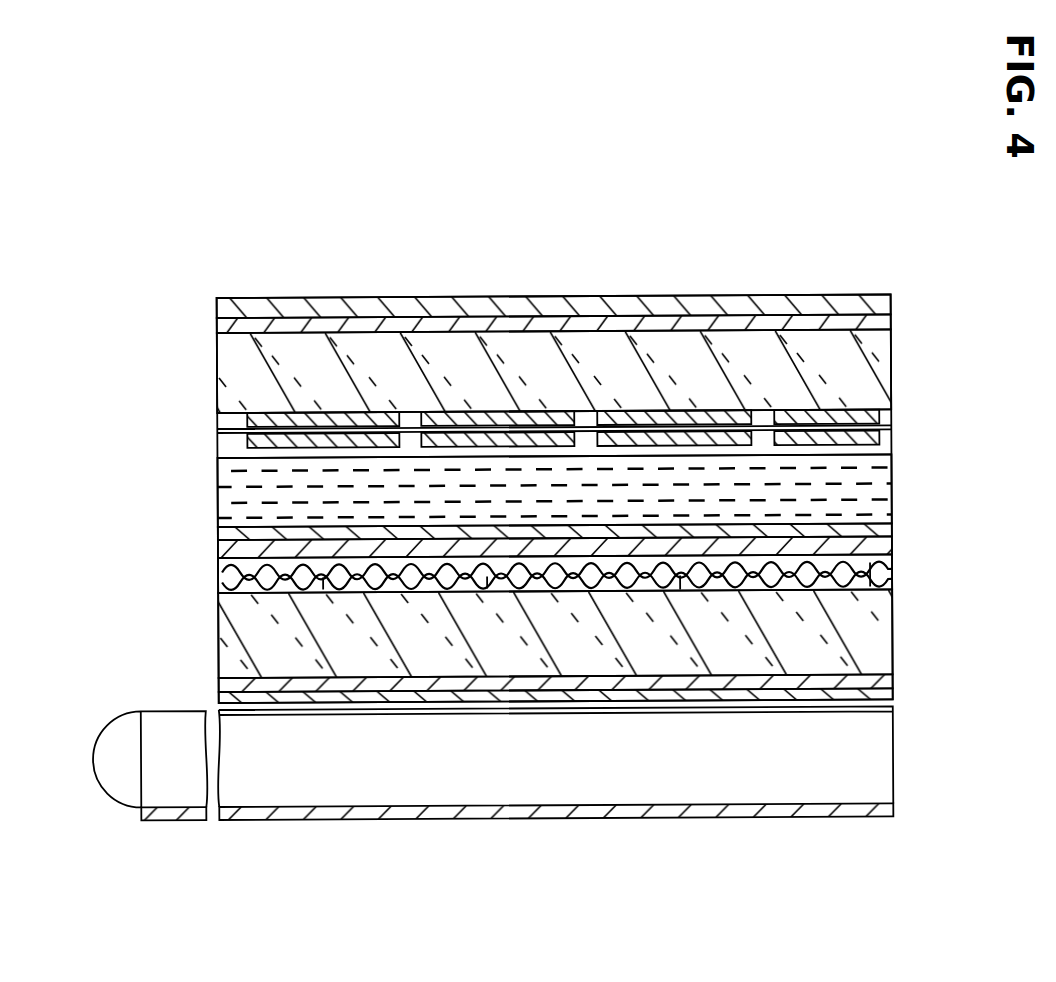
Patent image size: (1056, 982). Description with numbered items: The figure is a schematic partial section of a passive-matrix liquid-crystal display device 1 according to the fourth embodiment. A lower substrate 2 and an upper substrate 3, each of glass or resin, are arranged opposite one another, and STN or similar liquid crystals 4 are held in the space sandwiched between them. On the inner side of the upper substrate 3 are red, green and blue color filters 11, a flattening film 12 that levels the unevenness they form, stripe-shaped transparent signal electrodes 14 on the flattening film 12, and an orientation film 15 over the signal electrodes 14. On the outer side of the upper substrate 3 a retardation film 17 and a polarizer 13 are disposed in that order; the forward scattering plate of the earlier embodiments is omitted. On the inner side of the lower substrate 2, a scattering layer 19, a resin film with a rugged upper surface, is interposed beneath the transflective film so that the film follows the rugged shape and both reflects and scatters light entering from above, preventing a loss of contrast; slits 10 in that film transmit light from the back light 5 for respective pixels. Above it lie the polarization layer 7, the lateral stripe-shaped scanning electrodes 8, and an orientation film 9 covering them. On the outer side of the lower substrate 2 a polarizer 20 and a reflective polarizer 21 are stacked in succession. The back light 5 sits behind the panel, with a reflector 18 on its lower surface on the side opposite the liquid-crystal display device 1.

The liquid-crystal display device 1 is at (849, 278).
The lower substrate 2 is at (875, 623).
The upper substrate 3 is at (873, 381).
The liquid crystals 4 is at (880, 496).
The back light 5 is at (875, 760).
The polarization layer 7 is at (885, 563).
The scanning electrodes 8 is at (890, 548).
The orientation film 9 is at (880, 533).
The slits 10 is at (323, 590).
The color filters 11 is at (337, 418).
The flattening film 12 is at (880, 428).
The polarizer 13 is at (885, 309).
The signal electrodes 14 is at (283, 446).
The orientation film 15 is at (880, 448).
The retardation film 17 is at (885, 328).
The reflector 18 is at (880, 811).
The scattering layer 19 is at (218, 570).
The polarizer 20 is at (880, 683).
The reflective polarizer 21 is at (880, 698).